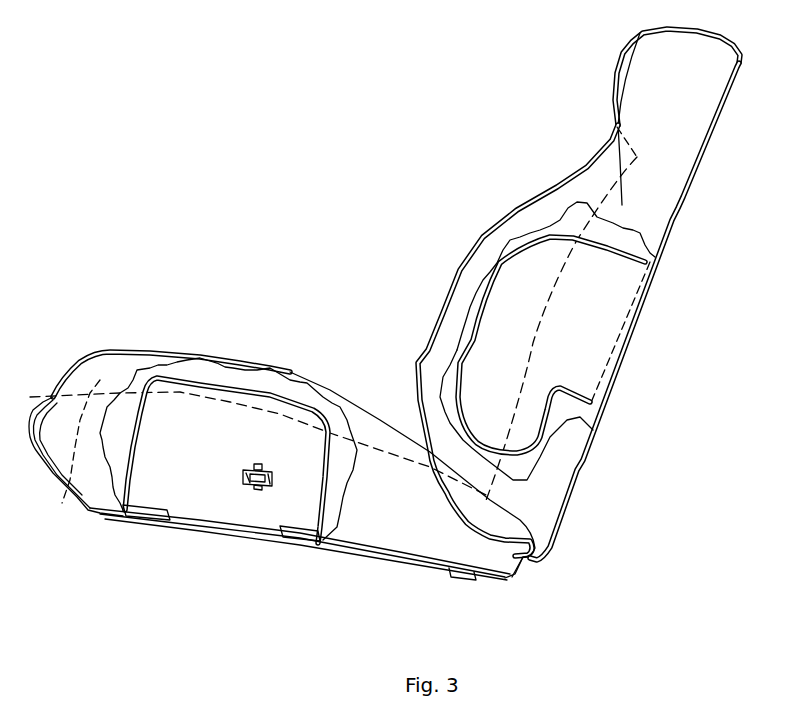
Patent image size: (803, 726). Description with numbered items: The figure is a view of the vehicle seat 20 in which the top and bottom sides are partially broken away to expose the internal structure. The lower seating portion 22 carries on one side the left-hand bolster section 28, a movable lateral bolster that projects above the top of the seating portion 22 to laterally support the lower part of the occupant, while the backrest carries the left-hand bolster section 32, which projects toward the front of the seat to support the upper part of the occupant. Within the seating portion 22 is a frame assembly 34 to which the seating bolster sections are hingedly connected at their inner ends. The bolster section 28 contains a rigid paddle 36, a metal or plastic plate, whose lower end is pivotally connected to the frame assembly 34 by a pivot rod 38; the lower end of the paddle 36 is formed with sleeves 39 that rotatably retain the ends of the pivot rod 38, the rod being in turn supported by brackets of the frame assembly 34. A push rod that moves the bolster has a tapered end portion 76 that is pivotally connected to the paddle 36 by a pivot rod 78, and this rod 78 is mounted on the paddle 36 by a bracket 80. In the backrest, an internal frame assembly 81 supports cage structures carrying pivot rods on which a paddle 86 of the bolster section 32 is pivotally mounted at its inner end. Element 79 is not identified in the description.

The vehicle seat 20 is at (553, 47).
The seating portion 22 is at (60, 501).
The left-hand bolster section 28 is at (122, 348).
The left-hand bolster section 32 is at (449, 292).
The frame assembly 34 is at (252, 548).
The rigid paddle 36 is at (200, 395).
The pivot rod 38 is at (213, 522).
The sleeve 39 is at (157, 517).
The tapered end portion 76 is at (258, 464).
The pivot rod 78 is at (274, 486).
The right mounting foot 79 is at (295, 535).
The bracket 80 is at (243, 474).
The internal frame assembly 81 is at (643, 325).
The paddle 86 is at (532, 275).